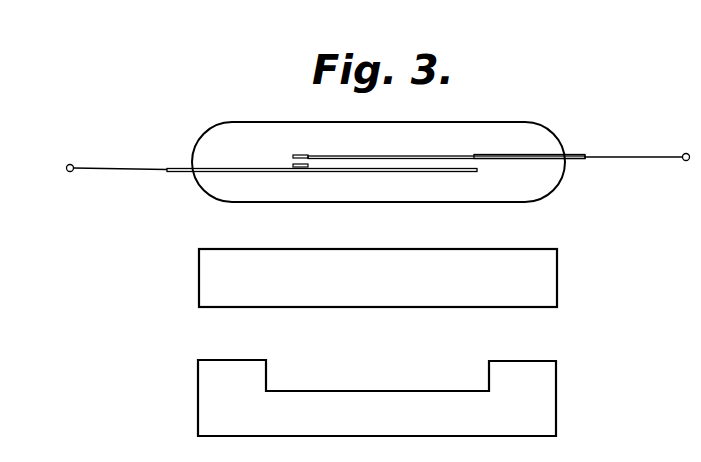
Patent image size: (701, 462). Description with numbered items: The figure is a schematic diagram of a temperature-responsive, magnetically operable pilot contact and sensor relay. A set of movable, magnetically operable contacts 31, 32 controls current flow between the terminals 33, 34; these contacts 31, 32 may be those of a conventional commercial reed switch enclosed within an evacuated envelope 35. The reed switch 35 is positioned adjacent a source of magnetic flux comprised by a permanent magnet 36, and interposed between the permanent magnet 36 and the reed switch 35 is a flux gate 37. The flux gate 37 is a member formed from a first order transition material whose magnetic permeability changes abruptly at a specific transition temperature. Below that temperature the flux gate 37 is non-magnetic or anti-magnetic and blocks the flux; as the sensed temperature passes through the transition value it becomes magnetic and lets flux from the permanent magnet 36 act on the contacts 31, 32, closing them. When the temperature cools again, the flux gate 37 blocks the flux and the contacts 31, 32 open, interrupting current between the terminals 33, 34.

The magnetically operable contact 31 is at (395, 157).
The magnetically operable contact 32 is at (271, 173).
The terminal 33 is at (70, 172).
The terminal 34 is at (686, 160).
The evacuated envelope 35 is at (543, 133).
The permanent magnet 36 is at (548, 415).
The flux gate 37 is at (551, 277).